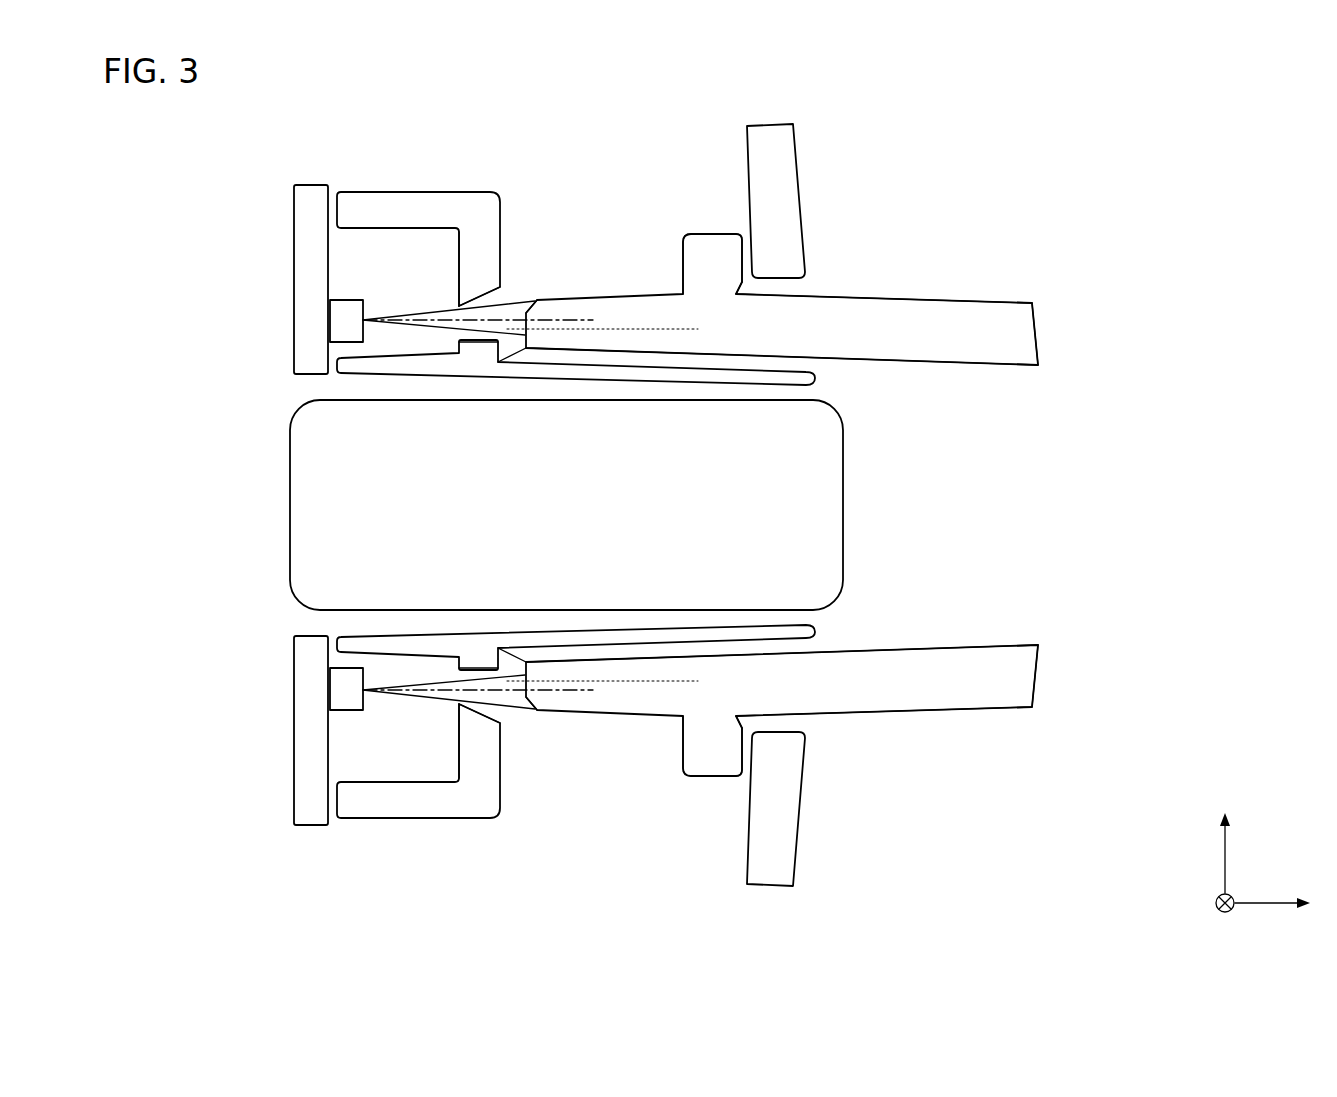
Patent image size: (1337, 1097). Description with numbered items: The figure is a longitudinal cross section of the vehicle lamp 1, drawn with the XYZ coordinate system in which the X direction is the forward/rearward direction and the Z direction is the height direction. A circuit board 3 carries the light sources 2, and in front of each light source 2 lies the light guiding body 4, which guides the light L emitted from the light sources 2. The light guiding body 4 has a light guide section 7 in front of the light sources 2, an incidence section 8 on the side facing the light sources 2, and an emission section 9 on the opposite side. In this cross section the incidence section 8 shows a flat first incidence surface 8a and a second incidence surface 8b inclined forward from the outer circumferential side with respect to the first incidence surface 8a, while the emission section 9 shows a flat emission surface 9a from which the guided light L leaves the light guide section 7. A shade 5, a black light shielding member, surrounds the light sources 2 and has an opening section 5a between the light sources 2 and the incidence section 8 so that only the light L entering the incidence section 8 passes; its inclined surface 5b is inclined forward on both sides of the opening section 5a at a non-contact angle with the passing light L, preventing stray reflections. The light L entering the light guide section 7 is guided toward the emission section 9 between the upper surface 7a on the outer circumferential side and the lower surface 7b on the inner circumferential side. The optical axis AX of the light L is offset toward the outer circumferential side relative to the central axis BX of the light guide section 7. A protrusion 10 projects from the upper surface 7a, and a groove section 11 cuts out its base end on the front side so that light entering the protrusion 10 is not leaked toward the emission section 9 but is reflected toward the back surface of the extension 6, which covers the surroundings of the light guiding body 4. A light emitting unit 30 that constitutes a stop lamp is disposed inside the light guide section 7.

The vehicle lamp 1 is at (233, 106).
The light source 2 is at (342, 322).
The circuit board 3 is at (313, 190).
The light guiding body 4 is at (1008, 286).
The shade 5 is at (453, 203).
The opening section 5a is at (453, 305).
The inclined surface 5b is at (498, 293).
The extension 6 is at (768, 133).
The light guide section 7 is at (963, 307).
The upper surface 7a is at (907, 300).
The lower surface 7b is at (938, 366).
The incidence section 8 is at (564, 483).
The first incidence surface 8a is at (526, 347).
The second incidence surface 8b is at (532, 302).
The emission section 9 is at (1088, 505).
The emission surface 9a is at (1022, 333).
The protrusion 10 is at (712, 236).
The groove section 11 is at (745, 285).
The light emitting unit 30 is at (843, 492).
The light L is at (407, 312).
The optical axis AX is at (578, 317).
The central axis BX is at (663, 330).